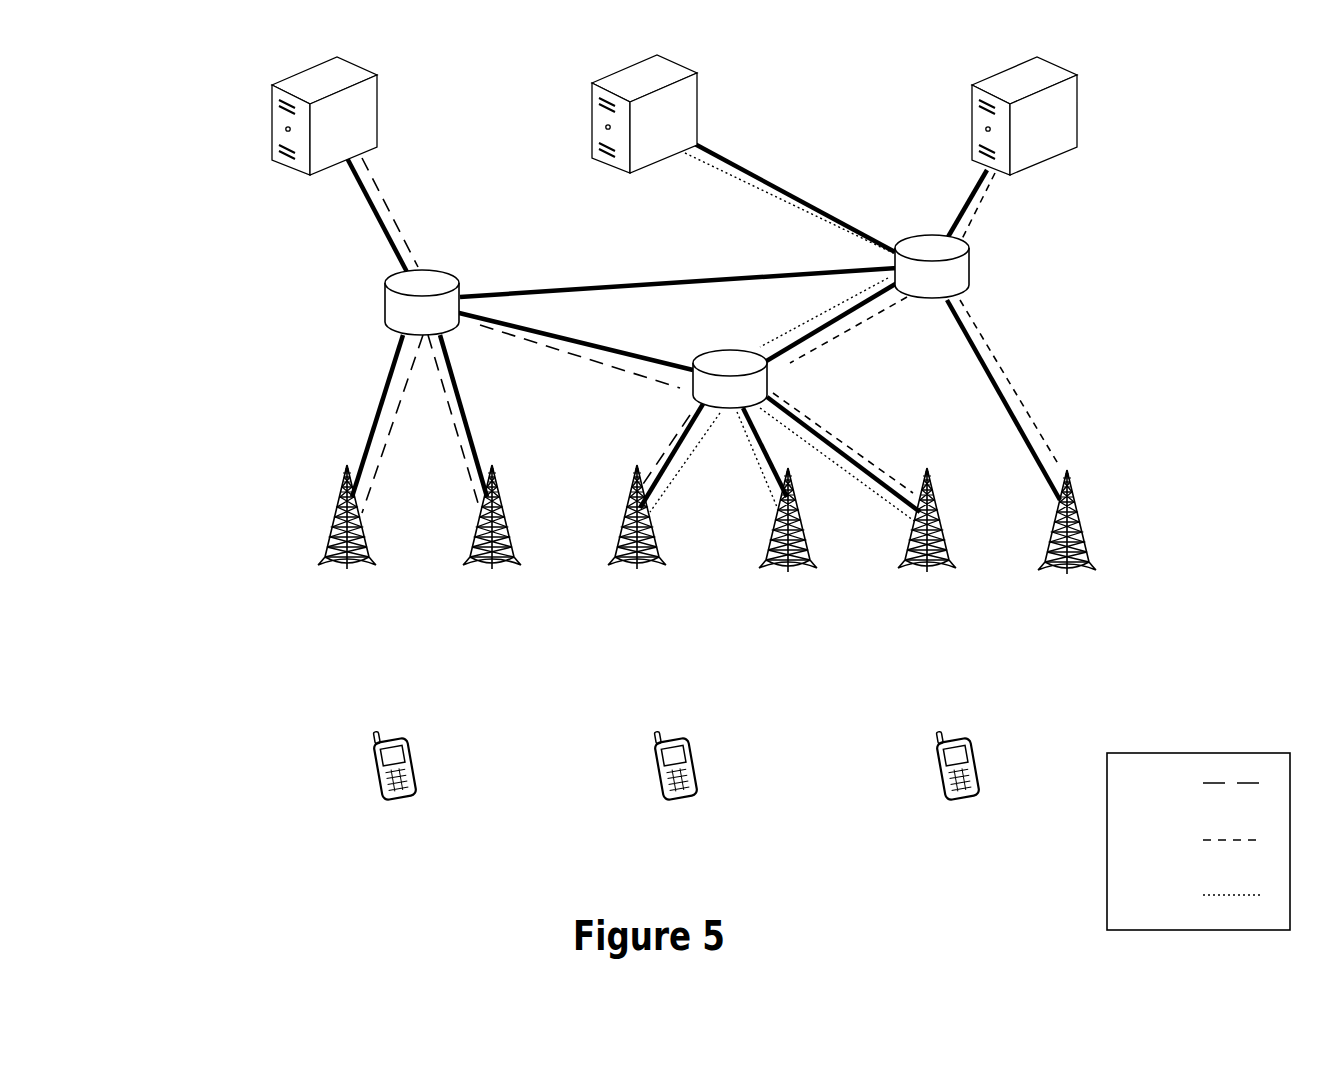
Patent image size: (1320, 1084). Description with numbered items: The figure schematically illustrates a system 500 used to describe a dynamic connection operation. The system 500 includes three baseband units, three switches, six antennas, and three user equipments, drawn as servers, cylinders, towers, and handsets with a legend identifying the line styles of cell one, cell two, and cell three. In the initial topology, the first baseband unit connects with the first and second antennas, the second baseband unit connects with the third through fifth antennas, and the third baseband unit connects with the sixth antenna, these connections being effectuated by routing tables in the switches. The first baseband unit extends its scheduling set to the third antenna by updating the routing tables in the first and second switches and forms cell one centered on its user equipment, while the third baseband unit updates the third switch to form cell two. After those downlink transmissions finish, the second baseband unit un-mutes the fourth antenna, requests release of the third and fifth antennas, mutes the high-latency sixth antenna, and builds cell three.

The system 500 is at (212, 83).